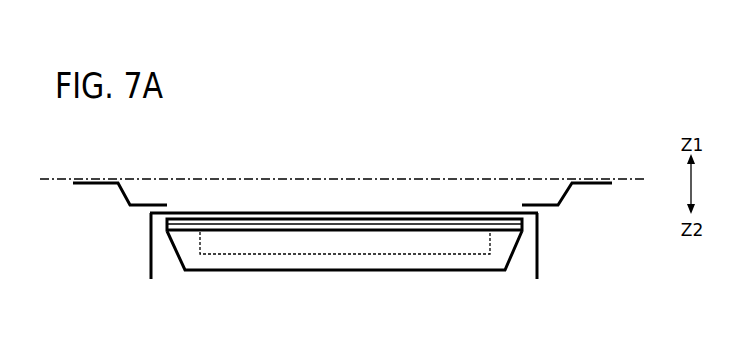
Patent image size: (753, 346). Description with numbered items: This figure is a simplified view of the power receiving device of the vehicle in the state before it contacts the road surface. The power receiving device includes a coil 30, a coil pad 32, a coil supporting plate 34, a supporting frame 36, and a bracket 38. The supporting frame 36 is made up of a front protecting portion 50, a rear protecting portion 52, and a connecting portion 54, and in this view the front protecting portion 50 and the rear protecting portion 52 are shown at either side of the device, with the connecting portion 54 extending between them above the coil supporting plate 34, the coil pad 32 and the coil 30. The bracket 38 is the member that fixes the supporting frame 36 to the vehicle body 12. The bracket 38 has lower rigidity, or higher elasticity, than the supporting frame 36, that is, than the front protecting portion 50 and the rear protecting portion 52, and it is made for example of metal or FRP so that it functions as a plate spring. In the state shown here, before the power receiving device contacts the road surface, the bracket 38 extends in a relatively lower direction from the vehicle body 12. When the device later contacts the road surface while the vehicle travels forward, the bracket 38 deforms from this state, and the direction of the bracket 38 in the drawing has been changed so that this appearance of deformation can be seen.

The vehicle body 12 is at (398, 179).
The coil 30 is at (430, 245).
The coil pad 32 is at (315, 271).
The coil supporting plate 34 is at (230, 218).
The supporting frame 36 is at (181, 285).
The bracket 38 is at (85, 185).
The front protecting portion 50 is at (148, 240).
The rear protecting portion 52 is at (541, 237).
The connecting portion 54 is at (284, 217).